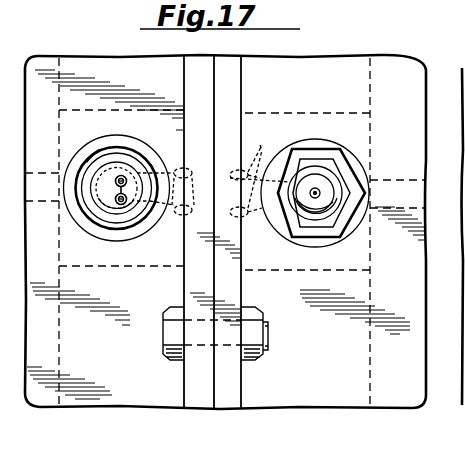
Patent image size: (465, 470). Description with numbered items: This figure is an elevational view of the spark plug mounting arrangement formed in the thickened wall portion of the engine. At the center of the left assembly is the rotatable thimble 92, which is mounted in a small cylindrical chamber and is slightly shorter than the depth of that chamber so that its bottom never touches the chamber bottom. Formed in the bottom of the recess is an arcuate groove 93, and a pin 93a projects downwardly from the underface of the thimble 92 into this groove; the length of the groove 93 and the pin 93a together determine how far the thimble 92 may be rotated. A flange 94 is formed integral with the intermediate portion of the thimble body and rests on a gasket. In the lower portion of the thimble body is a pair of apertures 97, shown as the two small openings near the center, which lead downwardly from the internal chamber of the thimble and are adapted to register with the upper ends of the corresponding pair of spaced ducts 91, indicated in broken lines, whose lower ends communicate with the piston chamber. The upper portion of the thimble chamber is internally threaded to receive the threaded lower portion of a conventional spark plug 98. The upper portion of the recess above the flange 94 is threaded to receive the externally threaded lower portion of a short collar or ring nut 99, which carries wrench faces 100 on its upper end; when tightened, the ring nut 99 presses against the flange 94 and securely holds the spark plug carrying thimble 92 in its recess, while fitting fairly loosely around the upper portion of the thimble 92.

The ducts 91 is at (262, 140).
The thimble 92 is at (140, 168).
The arcuate groove 93 is at (103, 232).
The pin 93a is at (103, 156).
The flange 94 is at (126, 222).
The apertures 97 is at (122, 180).
The spark plug 98 is at (332, 177).
The ring nut 99 is at (323, 146).
The wrench faces 100 is at (340, 174).